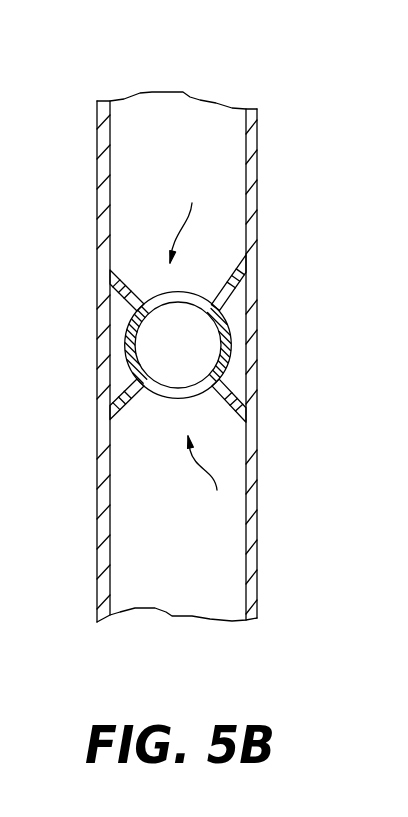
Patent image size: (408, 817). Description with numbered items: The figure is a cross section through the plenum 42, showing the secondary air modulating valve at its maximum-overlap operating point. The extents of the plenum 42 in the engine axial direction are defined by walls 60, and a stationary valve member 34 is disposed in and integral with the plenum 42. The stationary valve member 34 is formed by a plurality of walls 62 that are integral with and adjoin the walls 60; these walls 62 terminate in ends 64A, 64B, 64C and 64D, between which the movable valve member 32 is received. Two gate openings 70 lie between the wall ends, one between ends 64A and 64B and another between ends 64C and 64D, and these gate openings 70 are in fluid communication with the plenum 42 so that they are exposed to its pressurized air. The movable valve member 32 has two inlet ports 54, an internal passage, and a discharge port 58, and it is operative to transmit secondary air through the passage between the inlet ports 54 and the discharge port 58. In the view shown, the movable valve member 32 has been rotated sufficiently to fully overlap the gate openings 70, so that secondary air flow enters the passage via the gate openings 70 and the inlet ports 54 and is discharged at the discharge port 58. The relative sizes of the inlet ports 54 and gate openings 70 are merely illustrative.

The plenum 42 is at (185, 320).
The walls 60 is at (100, 182).
The walls 62 is at (233, 416).
The stationary valve member 34 is at (284, 364).
The movable valve member 32 is at (139, 313).
The inlet ports 54 is at (187, 297).
The discharge port 58 is at (177, 347).
The end 64A is at (222, 313).
The end 64B is at (143, 300).
The end 64C is at (147, 394).
The end 64D is at (227, 368).
The gate openings 70 is at (197, 348).